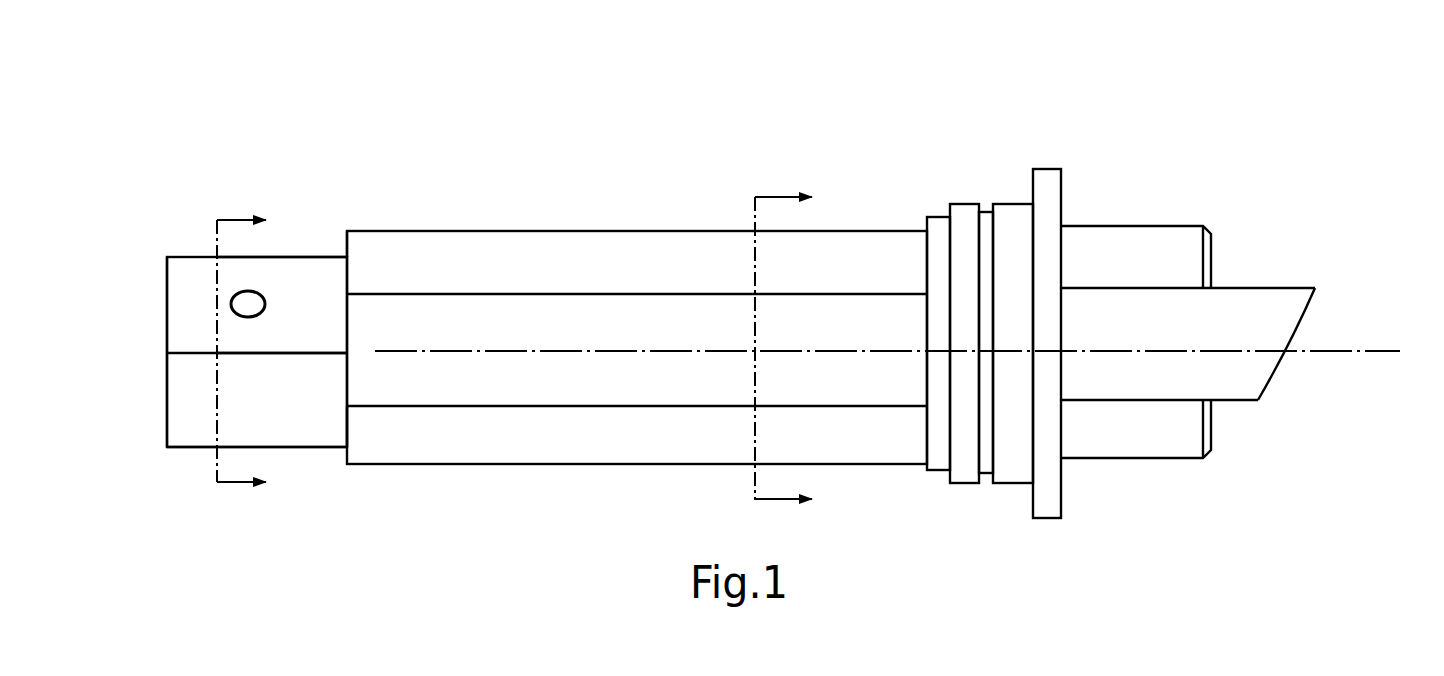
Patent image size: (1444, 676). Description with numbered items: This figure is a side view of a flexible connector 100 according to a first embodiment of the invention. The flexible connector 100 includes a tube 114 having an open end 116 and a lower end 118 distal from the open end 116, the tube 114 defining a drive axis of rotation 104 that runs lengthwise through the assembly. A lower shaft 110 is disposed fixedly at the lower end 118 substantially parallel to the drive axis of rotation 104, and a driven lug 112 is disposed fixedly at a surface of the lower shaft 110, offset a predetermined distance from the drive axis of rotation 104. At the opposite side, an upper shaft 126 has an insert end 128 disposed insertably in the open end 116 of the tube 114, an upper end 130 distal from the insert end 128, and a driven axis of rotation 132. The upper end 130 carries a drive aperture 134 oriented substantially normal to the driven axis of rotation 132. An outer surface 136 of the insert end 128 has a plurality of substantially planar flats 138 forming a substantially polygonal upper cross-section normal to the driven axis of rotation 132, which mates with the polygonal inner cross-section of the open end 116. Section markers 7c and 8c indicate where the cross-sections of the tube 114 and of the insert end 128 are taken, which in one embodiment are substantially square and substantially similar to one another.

The flexible connector 100 is at (697, 120).
The drive axis of rotation 104 is at (890, 330).
The lower shaft 110 is at (1211, 461).
The driven lug 112 is at (1298, 283).
The tube 114 is at (627, 281).
The open end 116 is at (345, 232).
The lower end 118 is at (1065, 198).
The upper shaft 126 is at (202, 450).
The insert end 128 is at (345, 420).
The upper end 130 is at (163, 245).
The driven axis of rotation 132 is at (126, 369).
The drive aperture 134 is at (247, 287).
The outer surface 136 is at (282, 333).
The planar flats 138 is at (282, 276).
The section line 7C-7C 7c is at (801, 346).
The section line 8C-8C 8c is at (260, 353).